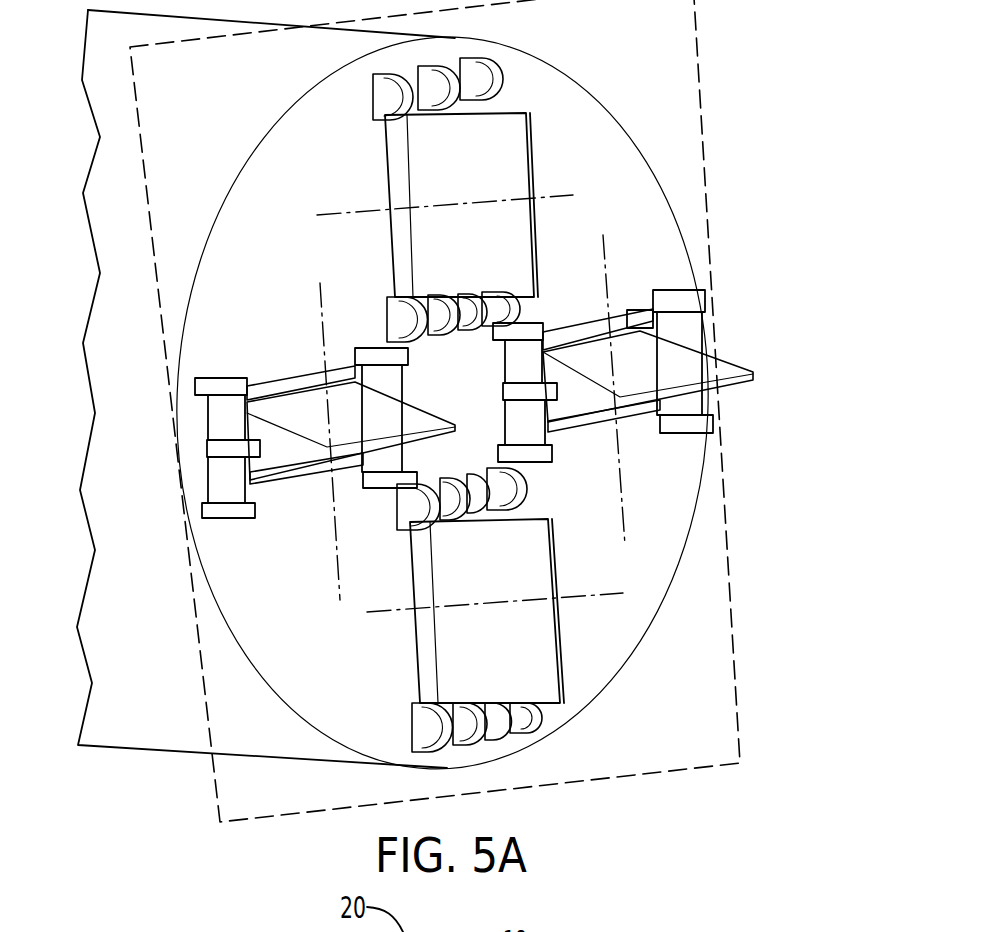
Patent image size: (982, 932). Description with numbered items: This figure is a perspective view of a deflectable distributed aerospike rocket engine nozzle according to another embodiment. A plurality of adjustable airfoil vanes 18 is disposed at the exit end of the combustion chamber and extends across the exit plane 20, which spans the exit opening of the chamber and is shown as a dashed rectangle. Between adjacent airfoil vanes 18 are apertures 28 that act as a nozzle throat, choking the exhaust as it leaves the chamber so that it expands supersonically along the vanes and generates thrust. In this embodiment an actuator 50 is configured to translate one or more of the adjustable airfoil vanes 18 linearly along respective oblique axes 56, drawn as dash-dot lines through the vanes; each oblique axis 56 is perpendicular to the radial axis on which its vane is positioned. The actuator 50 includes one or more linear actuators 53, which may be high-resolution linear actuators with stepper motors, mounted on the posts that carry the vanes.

The adjustable airfoil vane 18 is at (287, 445).
The exit plane 20 is at (737, 656).
The aperture 28 is at (275, 352).
The actuator 50 is at (200, 483).
The linear actuator 53 is at (228, 421).
The oblique axis 56 is at (320, 300).